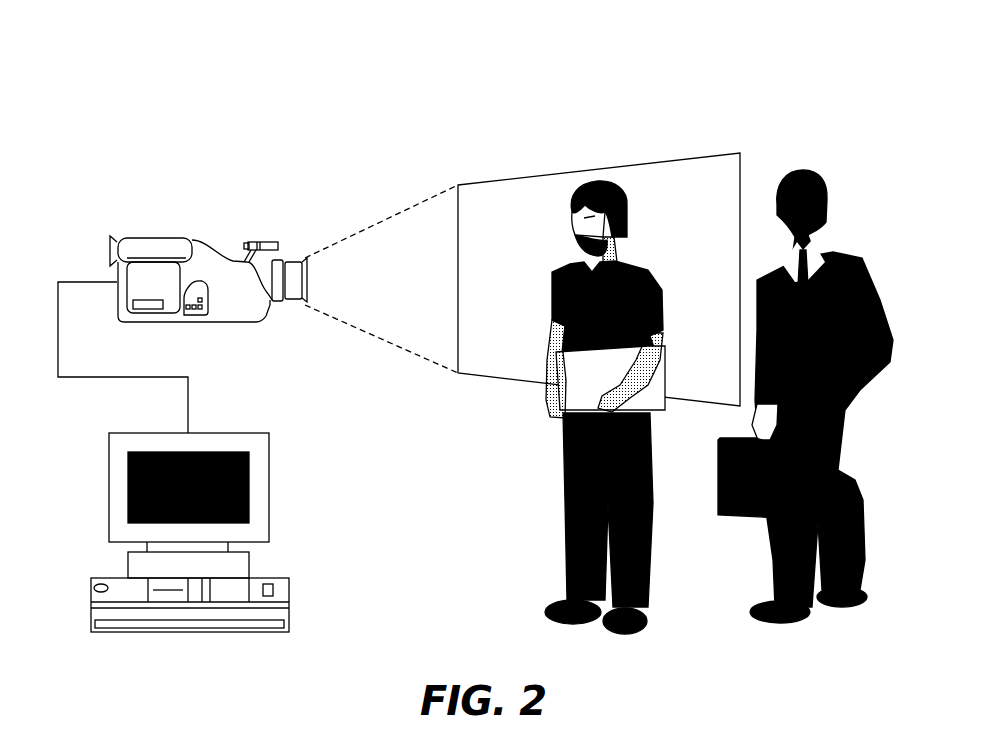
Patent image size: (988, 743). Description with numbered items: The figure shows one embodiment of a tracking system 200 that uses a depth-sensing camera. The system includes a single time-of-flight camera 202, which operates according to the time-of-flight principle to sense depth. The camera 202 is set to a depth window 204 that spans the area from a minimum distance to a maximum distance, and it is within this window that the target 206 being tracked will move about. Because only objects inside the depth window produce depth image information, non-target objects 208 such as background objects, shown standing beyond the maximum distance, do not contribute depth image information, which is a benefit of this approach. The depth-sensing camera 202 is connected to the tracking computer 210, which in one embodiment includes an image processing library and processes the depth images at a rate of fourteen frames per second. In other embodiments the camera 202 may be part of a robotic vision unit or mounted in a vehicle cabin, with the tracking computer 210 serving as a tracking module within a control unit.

The tracking system 200 is at (82, 130).
The time-of-flight camera 202 is at (175, 240).
The depth window 204 is at (737, 93).
The target 206 is at (607, 183).
The non-target object 208 is at (827, 172).
The tracking computer 210 is at (93, 618).